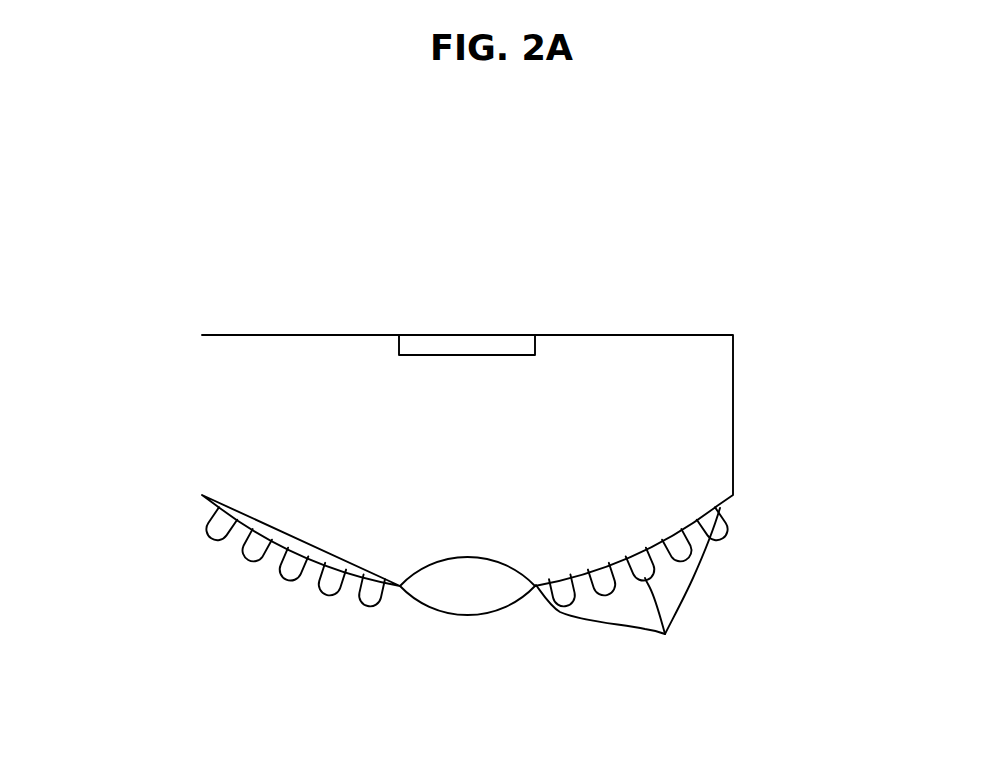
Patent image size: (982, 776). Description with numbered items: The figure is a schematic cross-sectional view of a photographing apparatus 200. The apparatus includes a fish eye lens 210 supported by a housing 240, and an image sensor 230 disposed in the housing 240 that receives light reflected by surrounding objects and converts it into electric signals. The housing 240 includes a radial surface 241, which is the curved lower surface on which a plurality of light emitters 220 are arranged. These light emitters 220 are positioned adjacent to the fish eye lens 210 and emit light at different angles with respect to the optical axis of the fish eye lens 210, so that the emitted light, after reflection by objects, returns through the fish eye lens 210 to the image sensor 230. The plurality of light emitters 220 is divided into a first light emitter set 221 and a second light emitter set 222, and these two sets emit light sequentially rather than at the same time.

The photographing apparatus 200 is at (742, 160).
The fish eye lens 210 is at (463, 616).
The plurality of light emitters 220 is at (192, 513).
The first light emitter set 221 is at (628, 588).
The second light emitter set 222 is at (603, 565).
The image sensor 230 is at (463, 345).
The housing 240 is at (733, 387).
The radial surface 241 is at (275, 546).